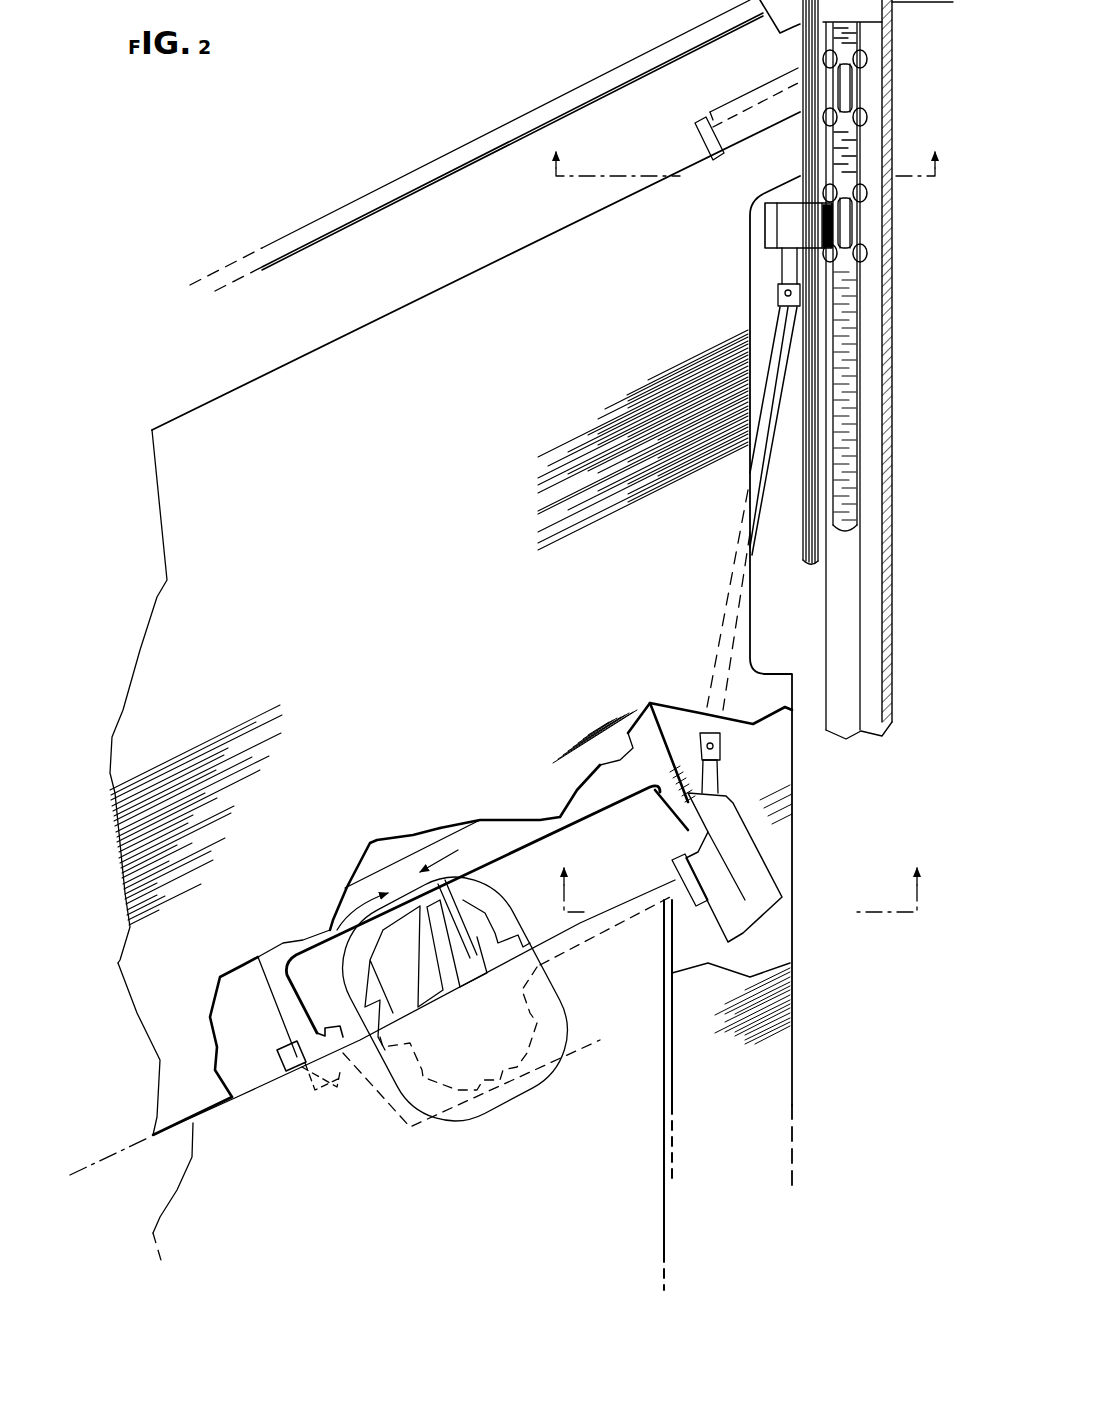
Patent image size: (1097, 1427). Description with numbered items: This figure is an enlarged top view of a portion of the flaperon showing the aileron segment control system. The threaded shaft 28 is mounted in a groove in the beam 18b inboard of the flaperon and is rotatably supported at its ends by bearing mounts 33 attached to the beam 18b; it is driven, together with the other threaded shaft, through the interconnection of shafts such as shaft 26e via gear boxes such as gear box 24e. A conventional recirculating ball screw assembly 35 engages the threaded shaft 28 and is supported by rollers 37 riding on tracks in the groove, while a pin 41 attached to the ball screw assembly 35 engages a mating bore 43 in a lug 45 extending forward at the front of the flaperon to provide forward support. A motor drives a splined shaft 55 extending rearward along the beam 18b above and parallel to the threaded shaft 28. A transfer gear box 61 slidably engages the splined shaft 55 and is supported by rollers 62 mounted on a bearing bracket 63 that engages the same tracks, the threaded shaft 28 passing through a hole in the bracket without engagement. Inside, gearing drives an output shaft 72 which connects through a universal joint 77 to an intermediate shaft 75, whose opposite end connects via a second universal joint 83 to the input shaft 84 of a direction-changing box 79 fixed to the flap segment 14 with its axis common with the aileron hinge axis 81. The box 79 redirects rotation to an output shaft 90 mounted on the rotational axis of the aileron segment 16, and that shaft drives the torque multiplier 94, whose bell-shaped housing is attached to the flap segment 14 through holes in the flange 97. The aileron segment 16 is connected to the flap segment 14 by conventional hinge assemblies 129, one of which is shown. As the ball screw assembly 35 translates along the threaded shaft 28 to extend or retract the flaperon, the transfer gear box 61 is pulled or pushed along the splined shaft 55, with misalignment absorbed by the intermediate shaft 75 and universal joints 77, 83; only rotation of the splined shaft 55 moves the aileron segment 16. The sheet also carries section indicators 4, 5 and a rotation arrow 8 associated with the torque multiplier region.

The flap segment 14 is at (444, 290).
The aileron segment 16 is at (472, 985).
The beam 18b is at (896, 464).
The gear box 24e is at (780, 36).
The shaft 26e is at (470, 149).
The threaded shaft 28 is at (858, 350).
The bearing mount 33 is at (882, 24).
The recirculating ball screw assembly 35 is at (866, 98).
The roller 37 is at (868, 60).
The pin 41 is at (698, 134).
The mating bore 43 is at (718, 100).
The lug 45 is at (700, 112).
The splined shaft 55 is at (800, 158).
The transfer gear box 61 is at (764, 226).
The roller 62 is at (868, 266).
The bearing bracket 63 is at (864, 221).
The output shaft 72 is at (780, 262).
The intermediate shaft 75 is at (762, 494).
The universal joint 77 is at (778, 292).
The direction-changing box 79 is at (672, 835).
The aileron hinge axis 81 is at (118, 1148).
The second universal joint 83 is at (720, 750).
The input shaft 84 is at (718, 778).
The output shaft 90 is at (600, 912).
The torque multiplier 94 is at (454, 898).
The flange 97 is at (468, 873).
The hinge assembly 129 is at (276, 1050).
The direction arrow 8 is at (397, 890).
The section line 4- 4 is at (743, 150).
The section line 5- 5 is at (738, 877).